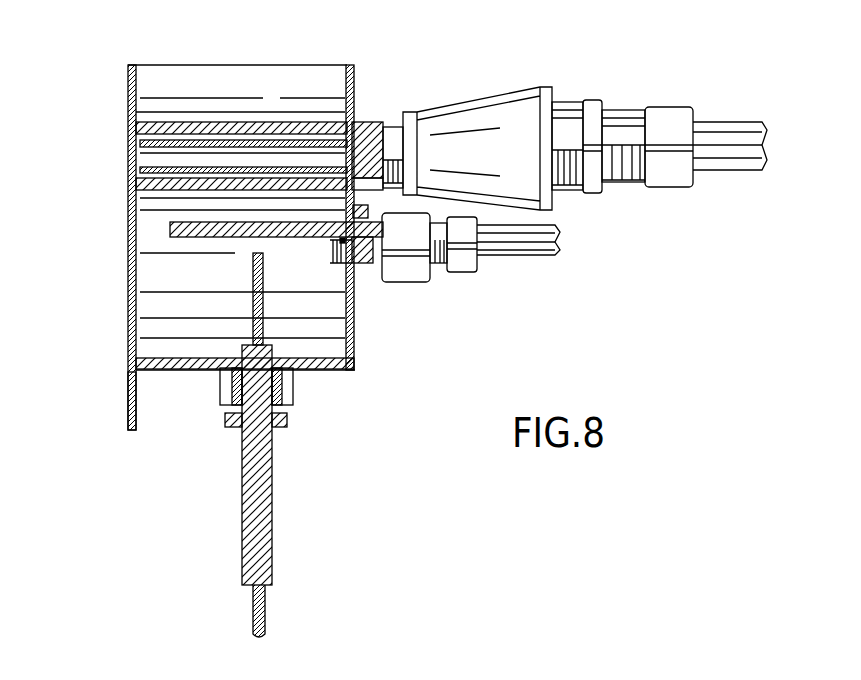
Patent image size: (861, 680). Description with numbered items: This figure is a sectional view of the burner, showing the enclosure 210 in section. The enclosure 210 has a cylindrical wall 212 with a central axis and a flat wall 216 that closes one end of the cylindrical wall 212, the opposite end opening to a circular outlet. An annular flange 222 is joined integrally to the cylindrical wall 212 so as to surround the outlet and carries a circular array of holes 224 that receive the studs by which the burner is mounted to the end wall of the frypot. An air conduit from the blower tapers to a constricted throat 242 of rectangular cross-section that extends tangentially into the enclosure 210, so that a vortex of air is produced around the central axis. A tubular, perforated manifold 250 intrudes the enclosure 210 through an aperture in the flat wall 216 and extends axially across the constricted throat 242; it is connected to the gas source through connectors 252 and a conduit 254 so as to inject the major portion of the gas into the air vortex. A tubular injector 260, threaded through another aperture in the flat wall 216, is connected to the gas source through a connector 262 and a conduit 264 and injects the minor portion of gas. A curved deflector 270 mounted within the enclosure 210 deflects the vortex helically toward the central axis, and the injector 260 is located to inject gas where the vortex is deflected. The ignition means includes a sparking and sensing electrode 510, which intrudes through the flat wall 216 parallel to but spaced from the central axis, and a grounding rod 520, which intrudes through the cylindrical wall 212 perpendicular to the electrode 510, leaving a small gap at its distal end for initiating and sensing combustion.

The enclosure 210 is at (337, 374).
The cylindrical wall 212 is at (303, 370).
The flat wall 216 is at (356, 318).
The annular flange 222 is at (137, 428).
The holes 224 is at (132, 105).
The constricted throat 242 is at (163, 187).
The manifold 250 is at (212, 138).
The connectors 252 is at (674, 90).
The conduit 254 is at (733, 118).
The injector 260 is at (335, 247).
The connector 262 is at (472, 284).
The conduit 264 is at (547, 245).
The curved deflector 270 is at (192, 280).
The sparking and sensing electrode 510 is at (173, 233).
The grounding rod 520 is at (262, 306).